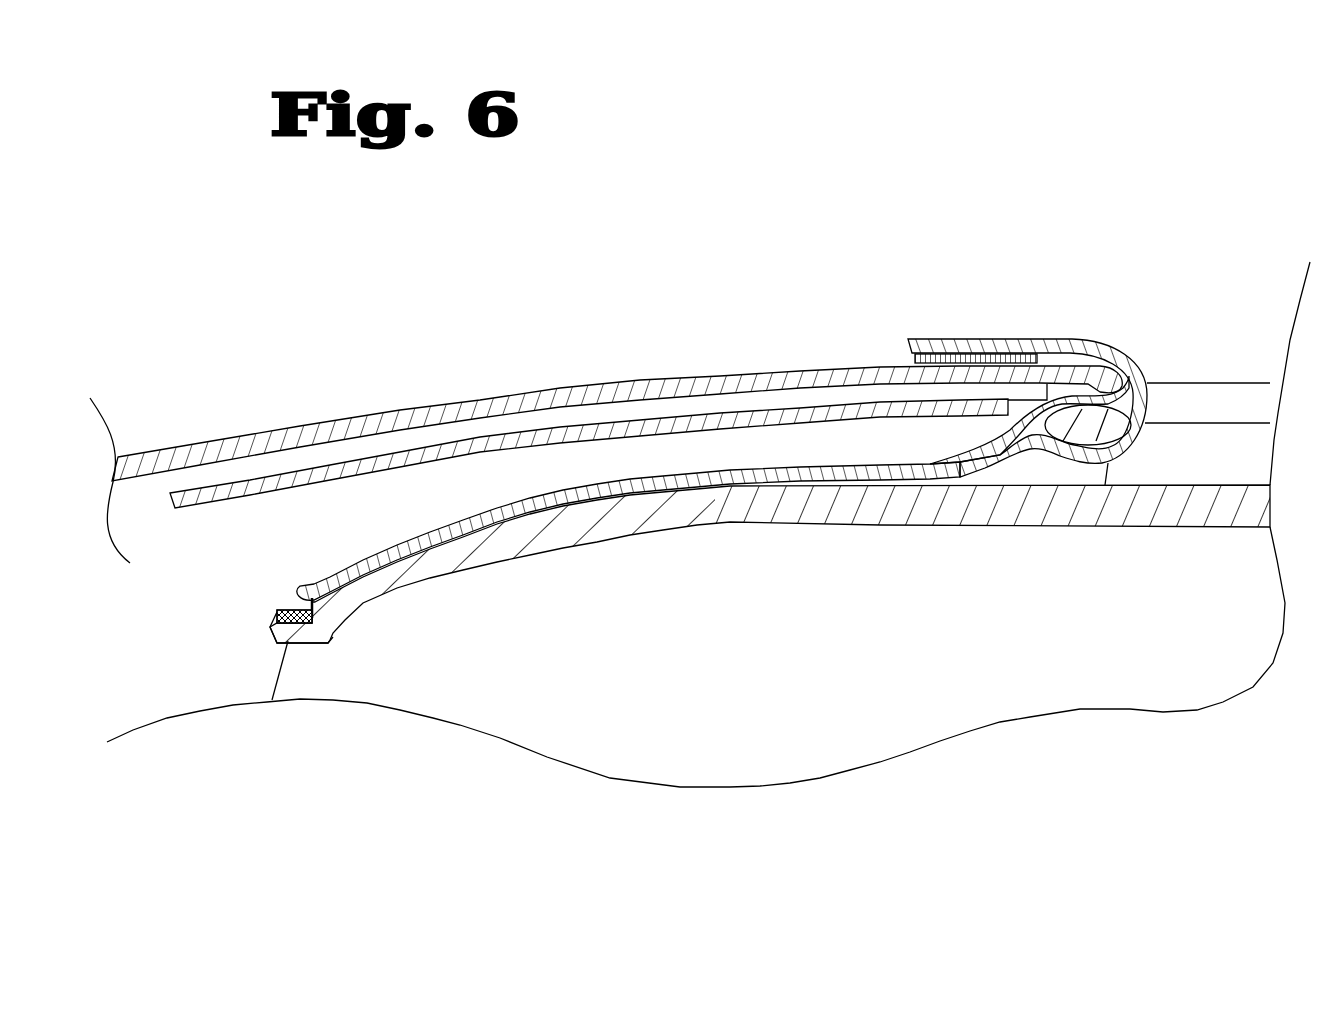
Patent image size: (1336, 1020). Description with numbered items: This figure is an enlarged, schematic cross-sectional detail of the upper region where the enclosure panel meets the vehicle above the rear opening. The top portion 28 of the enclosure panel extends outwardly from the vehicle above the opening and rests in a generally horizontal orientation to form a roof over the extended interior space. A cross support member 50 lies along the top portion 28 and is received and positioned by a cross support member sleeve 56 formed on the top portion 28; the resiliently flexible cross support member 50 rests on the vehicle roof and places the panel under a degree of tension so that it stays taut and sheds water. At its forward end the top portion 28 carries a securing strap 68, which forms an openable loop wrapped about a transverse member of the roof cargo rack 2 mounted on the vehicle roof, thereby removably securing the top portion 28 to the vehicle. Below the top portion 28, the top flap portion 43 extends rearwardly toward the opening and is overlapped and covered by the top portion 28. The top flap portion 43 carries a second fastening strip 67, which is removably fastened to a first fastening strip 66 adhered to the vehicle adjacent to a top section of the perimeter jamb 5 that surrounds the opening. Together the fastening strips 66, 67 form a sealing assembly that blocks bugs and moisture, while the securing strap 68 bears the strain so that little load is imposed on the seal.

The roof cargo rack 2 is at (1100, 428).
The perimeter jamb 5 is at (277, 640).
The top portion 28 is at (700, 383).
The top flap portion 43 is at (665, 480).
The cross support member 50 is at (347, 447).
The cross support member sleeve 56 is at (197, 493).
The first fastening strip 66 is at (280, 610).
The second fastening strip 67 is at (333, 634).
The securing strap 68 is at (1087, 338).